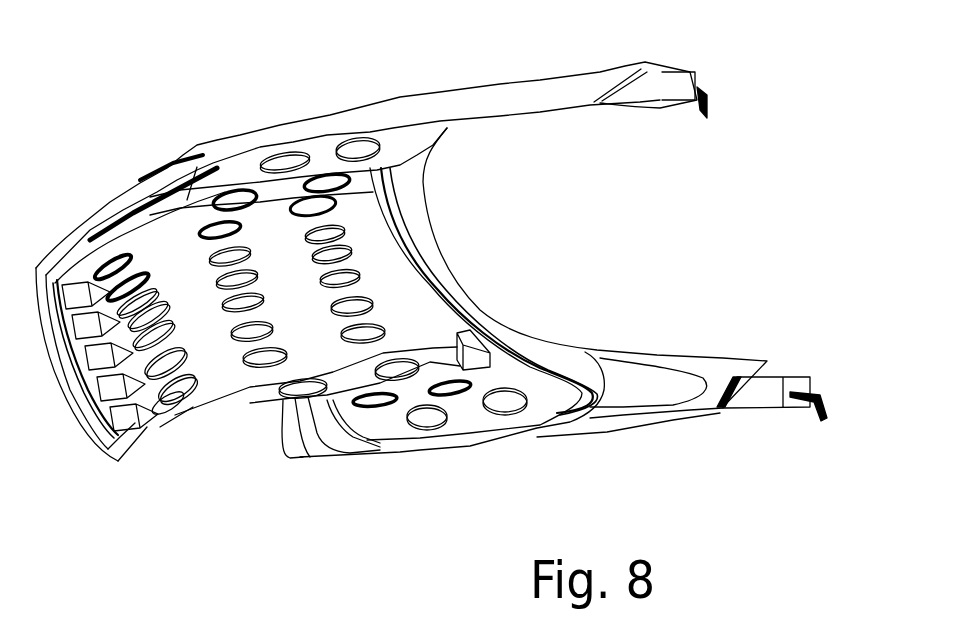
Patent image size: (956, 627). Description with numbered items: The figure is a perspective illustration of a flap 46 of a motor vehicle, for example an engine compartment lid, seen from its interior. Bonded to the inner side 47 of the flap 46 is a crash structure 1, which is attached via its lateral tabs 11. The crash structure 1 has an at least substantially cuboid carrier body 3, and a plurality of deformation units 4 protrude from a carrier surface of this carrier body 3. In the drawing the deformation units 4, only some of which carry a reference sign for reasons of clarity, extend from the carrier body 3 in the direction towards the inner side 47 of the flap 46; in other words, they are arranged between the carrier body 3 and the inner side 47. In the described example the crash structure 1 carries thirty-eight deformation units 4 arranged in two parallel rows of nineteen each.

The crash structure 1 is at (220, 373).
The carrier body 3 is at (172, 262).
The deformation units 4 is at (358, 143).
The lateral tabs 11 is at (442, 320).
The flap 46 is at (158, 108).
The inner side 47 is at (540, 333).